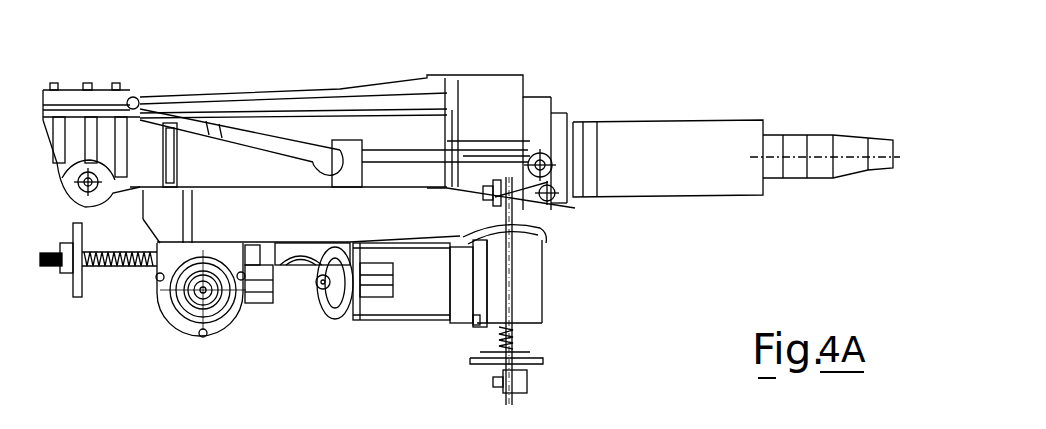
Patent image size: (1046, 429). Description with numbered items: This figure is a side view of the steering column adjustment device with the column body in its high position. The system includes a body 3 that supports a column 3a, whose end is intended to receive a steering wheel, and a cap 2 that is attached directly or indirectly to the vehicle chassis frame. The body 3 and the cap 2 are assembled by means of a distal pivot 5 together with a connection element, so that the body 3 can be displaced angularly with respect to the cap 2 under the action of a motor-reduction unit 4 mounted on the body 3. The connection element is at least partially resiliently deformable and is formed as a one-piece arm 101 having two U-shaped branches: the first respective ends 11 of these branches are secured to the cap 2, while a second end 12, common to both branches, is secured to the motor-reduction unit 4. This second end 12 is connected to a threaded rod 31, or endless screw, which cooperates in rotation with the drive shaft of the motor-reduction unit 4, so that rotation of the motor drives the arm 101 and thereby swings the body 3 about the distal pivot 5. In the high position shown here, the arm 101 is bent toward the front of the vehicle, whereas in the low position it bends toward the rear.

The cap 2 is at (527, 88).
The body 3 is at (542, 218).
The column 3a is at (722, 128).
The motor-reduction unit 4 is at (530, 307).
The distal pivot 5 is at (88, 181).
The first ends 11 is at (549, 197).
The second end 12 is at (517, 401).
The threaded rod 31 is at (500, 350).
The arm 101 is at (517, 284).